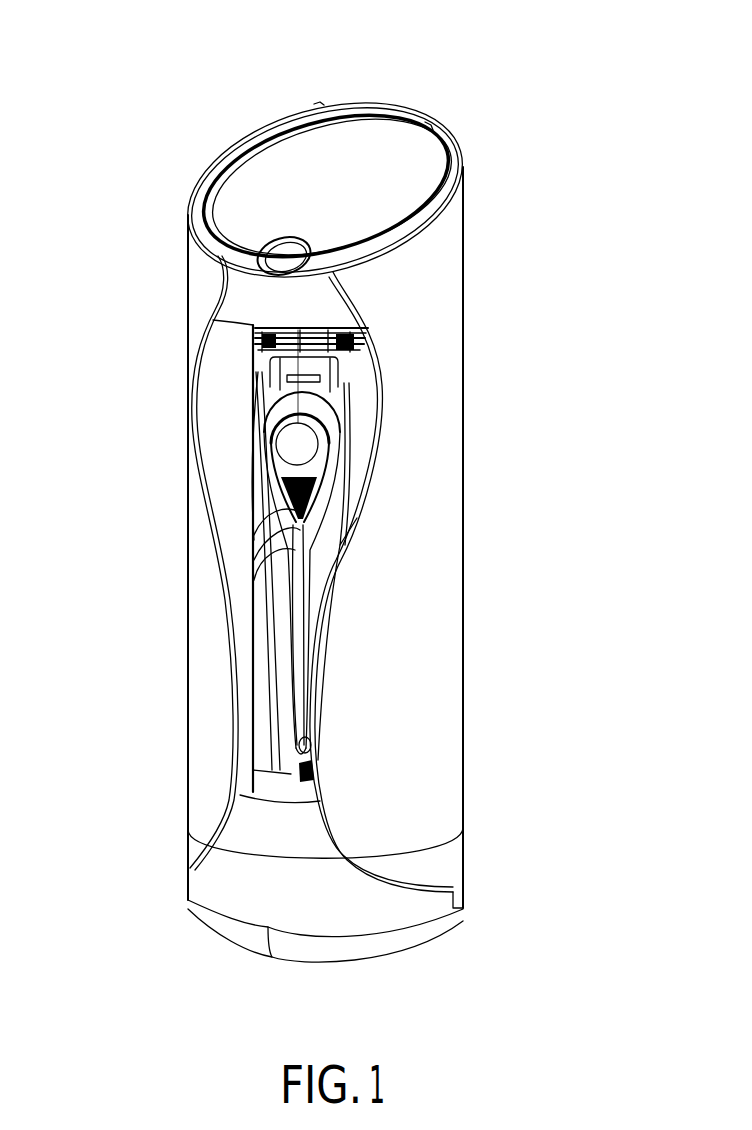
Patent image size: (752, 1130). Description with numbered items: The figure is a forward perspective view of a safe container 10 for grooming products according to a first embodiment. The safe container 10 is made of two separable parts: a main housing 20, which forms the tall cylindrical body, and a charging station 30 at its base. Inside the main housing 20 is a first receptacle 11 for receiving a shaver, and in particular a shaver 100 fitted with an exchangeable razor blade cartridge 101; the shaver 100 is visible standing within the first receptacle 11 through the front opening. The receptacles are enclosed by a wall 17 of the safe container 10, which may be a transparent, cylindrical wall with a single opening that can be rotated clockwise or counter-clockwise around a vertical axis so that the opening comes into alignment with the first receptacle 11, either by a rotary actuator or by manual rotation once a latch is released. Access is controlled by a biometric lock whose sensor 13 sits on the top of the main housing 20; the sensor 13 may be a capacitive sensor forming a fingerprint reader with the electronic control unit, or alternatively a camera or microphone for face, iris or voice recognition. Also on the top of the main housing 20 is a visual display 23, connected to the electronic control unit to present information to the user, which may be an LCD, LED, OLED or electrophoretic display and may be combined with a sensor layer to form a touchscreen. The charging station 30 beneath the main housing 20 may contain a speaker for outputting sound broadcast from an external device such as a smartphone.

The safe container 10 is at (120, 60).
The first receptacle 11 is at (352, 530).
The sensor 13 is at (279, 250).
The wall 17 is at (227, 400).
The main housing 20 is at (445, 298).
The visual display 23 is at (382, 125).
The charging station 30 is at (402, 918).
The shaver 100 is at (320, 494).
The razor blade cartridge 101 is at (367, 353).